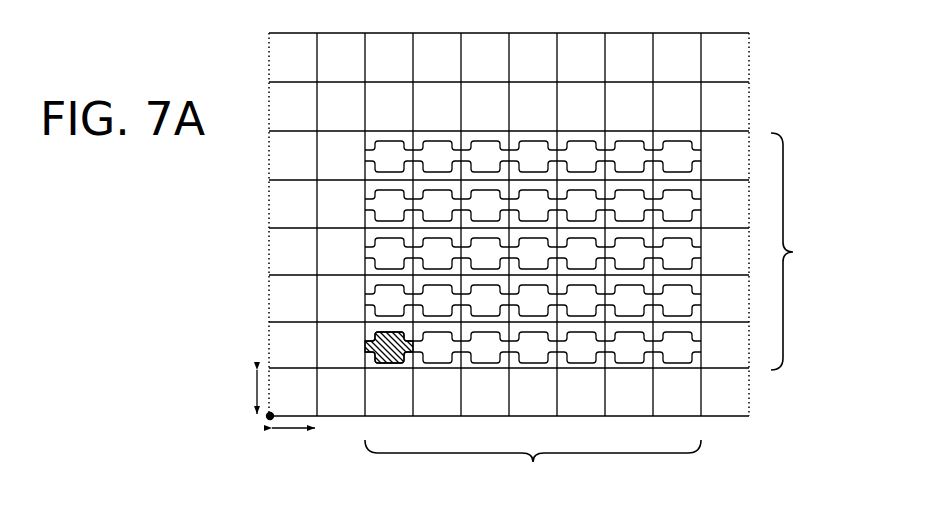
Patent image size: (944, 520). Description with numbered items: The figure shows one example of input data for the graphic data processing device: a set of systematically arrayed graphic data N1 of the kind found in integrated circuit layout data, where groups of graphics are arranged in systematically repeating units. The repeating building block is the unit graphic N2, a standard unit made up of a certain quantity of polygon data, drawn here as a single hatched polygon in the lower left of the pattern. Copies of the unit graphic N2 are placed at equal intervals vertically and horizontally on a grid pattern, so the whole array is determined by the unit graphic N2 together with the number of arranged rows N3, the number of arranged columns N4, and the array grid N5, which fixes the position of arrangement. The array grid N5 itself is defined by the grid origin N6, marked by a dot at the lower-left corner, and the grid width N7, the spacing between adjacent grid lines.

The systematically arrayed graphic data N1 is at (701, 156).
The unit graphic N2 is at (365, 341).
The number of arranged rows N3 is at (533, 467).
The number of arranged columns N4 is at (799, 251).
The array grid N5 is at (749, 89).
The grid origin N6 is at (269, 419).
The grid width N7 is at (255, 392).